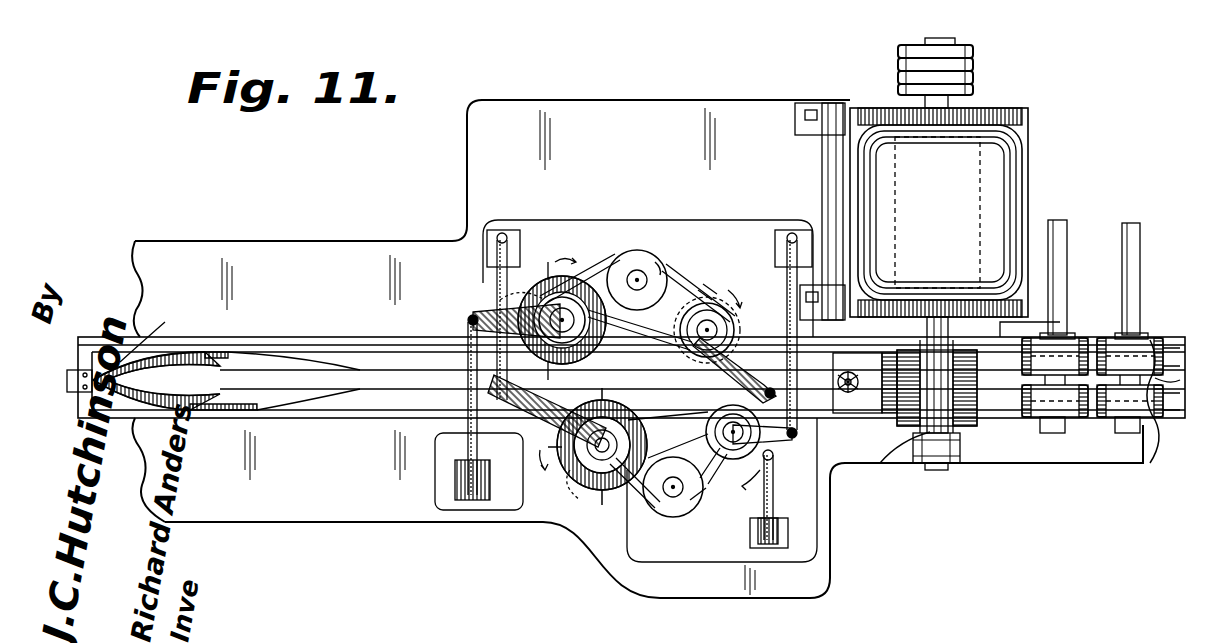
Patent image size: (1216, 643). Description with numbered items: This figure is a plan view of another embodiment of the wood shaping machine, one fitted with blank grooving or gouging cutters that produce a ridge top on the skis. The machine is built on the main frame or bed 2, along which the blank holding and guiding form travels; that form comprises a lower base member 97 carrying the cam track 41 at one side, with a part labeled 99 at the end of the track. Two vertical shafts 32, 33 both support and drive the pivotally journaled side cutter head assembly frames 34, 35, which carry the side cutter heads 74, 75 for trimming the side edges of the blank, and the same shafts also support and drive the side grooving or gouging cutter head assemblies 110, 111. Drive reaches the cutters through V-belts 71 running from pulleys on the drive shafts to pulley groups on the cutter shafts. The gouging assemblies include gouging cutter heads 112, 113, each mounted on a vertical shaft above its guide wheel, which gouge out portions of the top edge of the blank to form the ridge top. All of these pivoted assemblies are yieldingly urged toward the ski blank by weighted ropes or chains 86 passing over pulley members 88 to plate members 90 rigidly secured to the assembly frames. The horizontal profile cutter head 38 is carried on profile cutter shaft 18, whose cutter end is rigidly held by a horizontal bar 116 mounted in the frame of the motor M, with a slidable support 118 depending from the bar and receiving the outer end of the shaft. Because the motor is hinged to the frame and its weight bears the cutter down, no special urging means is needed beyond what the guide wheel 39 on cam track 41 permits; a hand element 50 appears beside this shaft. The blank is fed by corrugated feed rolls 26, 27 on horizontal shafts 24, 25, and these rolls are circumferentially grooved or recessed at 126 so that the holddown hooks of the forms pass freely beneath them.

The main frame 2 is at (318, 518).
The cam track 41 is at (96, 337).
The rail end stop 99 is at (67, 383).
The lower base member 97 is at (90, 378).
The pulley members 88 is at (520, 243).
The ropes or chains 86 is at (487, 302).
The plate members 90 is at (800, 448).
The vertical shaft 32 is at (665, 262).
The side grooving or gouging cutter head assembly 110 is at (572, 321).
The side cutter head 74 is at (752, 308).
The side grooving or gouging cutter head assembly 111 is at (601, 446).
The vertical shaft 33 is at (680, 515).
The side cutter head 75 is at (722, 420).
The V-belts 71 is at (600, 272).
The side cutter head assembly frame 34 is at (700, 292).
The side cutter head assembly frame 35 is at (715, 500).
The gouging cutter head 112 is at (495, 275).
The gouging cutter head 113 is at (575, 495).
The motor M is at (939, 177).
The profile cutter shaft 18 is at (938, 295).
The horizontal profiling cutter head 38 is at (972, 430).
The slidable support 118 is at (910, 470).
The horizontal bar 116 is at (889, 464).
The hand wheel 50 is at (885, 413).
The horizontal shaft 24 is at (1075, 202).
The horizontal shaft 25 is at (1137, 225).
The guide wheel 39 is at (993, 337).
The corrugated feed roll 26 is at (1065, 420).
The corrugated feed roll 27 is at (1160, 430).
The circumferential groove 126 is at (1155, 385).